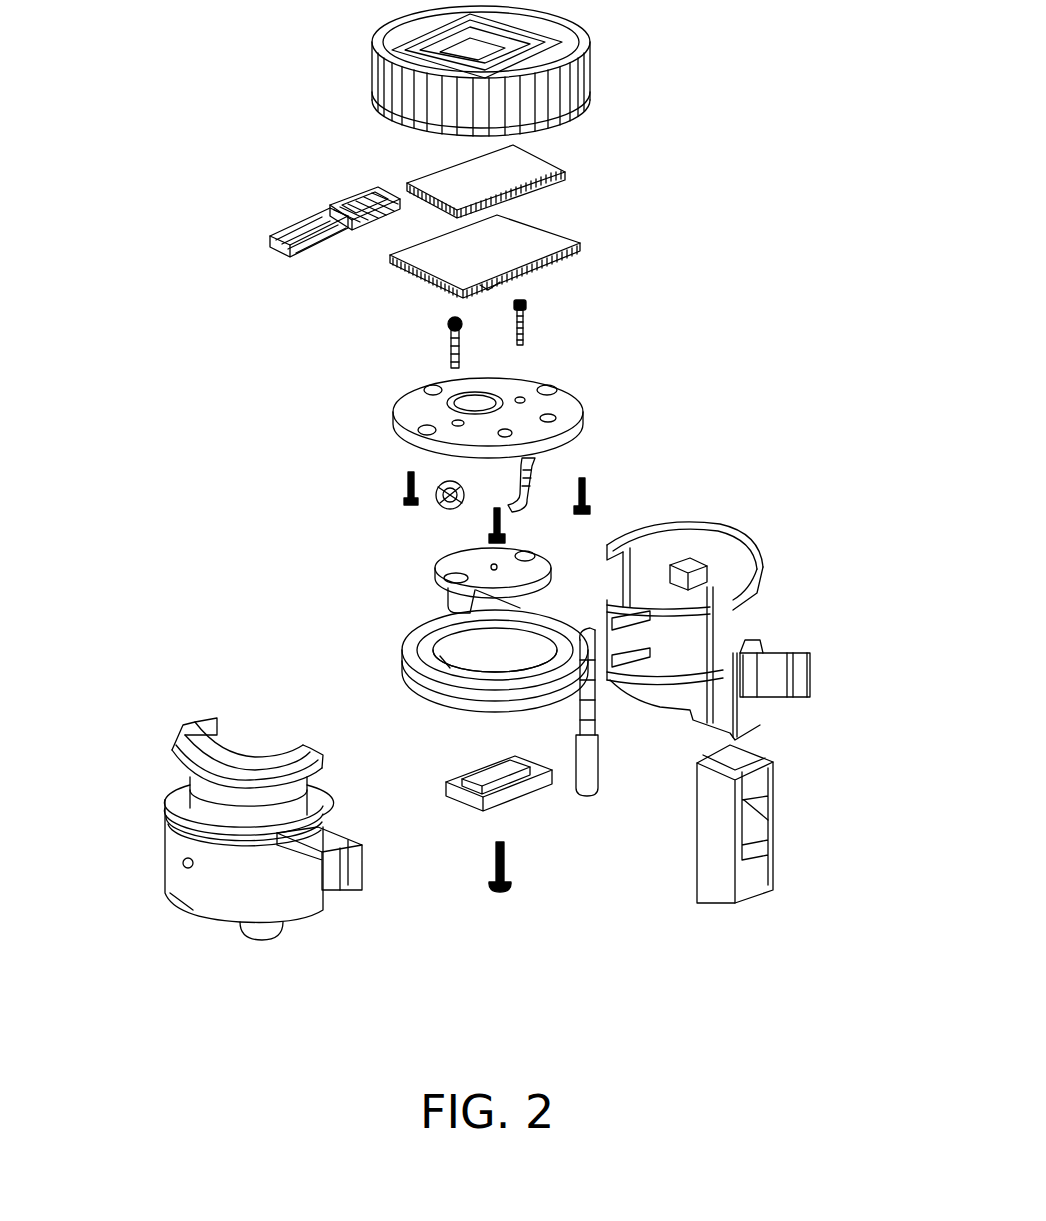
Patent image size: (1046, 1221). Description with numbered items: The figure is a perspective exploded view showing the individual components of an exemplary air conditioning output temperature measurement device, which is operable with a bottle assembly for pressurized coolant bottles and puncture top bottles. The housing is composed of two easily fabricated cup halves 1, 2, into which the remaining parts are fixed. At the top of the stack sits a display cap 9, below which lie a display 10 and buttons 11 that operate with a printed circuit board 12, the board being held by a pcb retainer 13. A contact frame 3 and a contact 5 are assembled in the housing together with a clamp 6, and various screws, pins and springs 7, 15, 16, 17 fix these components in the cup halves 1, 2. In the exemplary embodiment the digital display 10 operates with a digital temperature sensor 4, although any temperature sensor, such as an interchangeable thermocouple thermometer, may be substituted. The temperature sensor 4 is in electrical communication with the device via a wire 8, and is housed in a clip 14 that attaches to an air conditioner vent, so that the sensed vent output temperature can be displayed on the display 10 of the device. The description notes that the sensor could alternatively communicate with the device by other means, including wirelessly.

The cup half 1 is at (808, 660).
The cup half 2 is at (165, 748).
The contact frame 3 is at (435, 575).
The temperature sensor 4 is at (596, 790).
The contact 5 is at (458, 494).
The clamp 6 is at (458, 805).
The screw 7 is at (512, 898).
The wire 8 is at (440, 708).
The display cap 9 is at (505, 12).
The display 10 is at (545, 155).
The buttons 11 is at (252, 241).
The printed circuit board 12 is at (378, 250).
The pcb retainer 13 is at (455, 452).
The clip 14 is at (713, 898).
The pin 15 is at (445, 372).
The screw 16 is at (462, 323).
The spring 17 is at (398, 500).